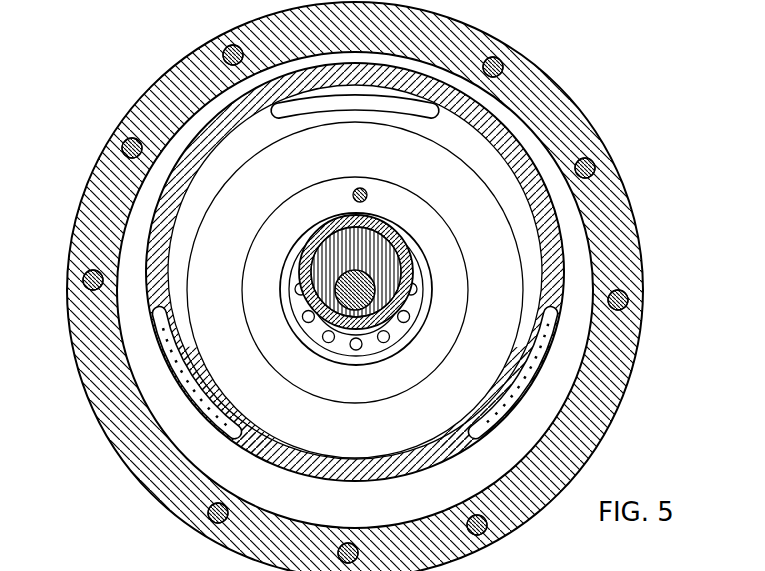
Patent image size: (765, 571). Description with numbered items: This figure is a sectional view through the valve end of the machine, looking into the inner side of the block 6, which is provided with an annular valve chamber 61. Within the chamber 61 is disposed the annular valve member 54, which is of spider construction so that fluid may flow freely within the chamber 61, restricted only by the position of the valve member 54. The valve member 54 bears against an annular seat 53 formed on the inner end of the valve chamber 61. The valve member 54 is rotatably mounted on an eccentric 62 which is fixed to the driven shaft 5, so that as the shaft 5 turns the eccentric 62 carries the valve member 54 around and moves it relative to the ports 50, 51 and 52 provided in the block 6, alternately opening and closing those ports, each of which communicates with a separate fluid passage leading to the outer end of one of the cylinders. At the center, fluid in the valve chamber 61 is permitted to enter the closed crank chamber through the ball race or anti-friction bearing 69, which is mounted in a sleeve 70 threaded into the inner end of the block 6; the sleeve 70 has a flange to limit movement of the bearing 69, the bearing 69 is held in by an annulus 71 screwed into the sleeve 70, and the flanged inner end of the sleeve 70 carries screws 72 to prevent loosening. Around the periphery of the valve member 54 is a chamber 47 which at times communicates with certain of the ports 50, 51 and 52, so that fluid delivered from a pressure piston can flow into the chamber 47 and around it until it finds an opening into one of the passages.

The driven shaft 5 is at (393, 305).
The block 6 is at (637, 367).
The chamber 47 is at (562, 395).
The port 50 is at (213, 428).
The port 51 is at (373, 102).
The port 52 is at (477, 455).
The annular seat 53 is at (516, 209).
The valve member 54 is at (262, 440).
The annular valve chamber 61 is at (230, 150).
The eccentric 62 is at (385, 262).
The anti-friction bearing 69 is at (372, 350).
The sleeve 70 is at (456, 293).
The annulus 71 is at (370, 357).
The screws 72 is at (366, 190).